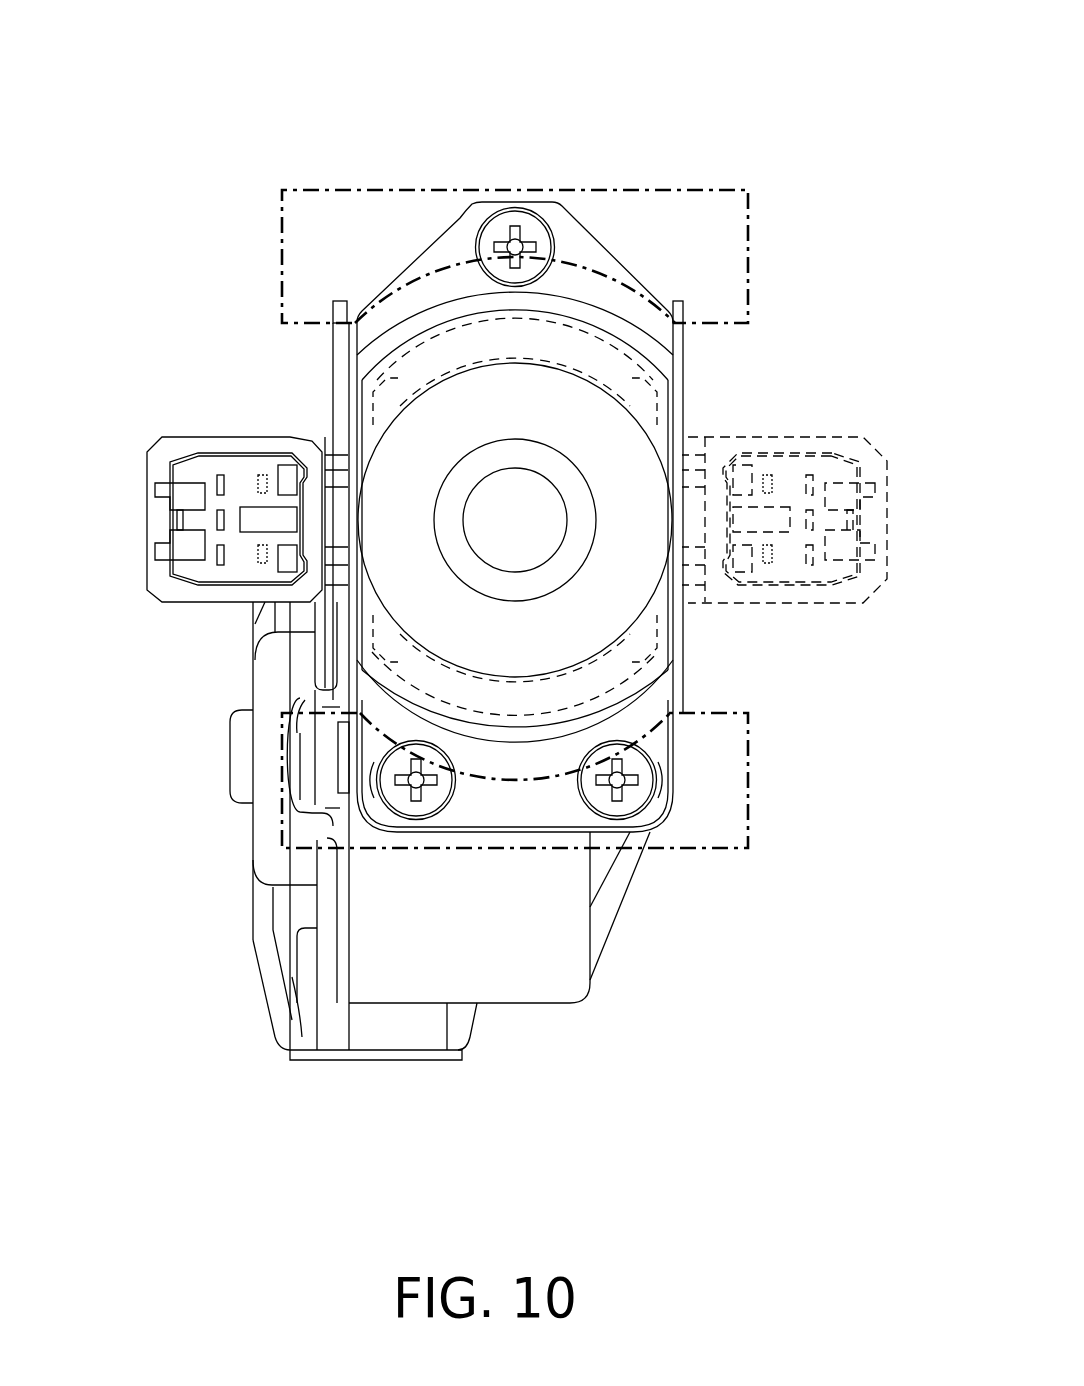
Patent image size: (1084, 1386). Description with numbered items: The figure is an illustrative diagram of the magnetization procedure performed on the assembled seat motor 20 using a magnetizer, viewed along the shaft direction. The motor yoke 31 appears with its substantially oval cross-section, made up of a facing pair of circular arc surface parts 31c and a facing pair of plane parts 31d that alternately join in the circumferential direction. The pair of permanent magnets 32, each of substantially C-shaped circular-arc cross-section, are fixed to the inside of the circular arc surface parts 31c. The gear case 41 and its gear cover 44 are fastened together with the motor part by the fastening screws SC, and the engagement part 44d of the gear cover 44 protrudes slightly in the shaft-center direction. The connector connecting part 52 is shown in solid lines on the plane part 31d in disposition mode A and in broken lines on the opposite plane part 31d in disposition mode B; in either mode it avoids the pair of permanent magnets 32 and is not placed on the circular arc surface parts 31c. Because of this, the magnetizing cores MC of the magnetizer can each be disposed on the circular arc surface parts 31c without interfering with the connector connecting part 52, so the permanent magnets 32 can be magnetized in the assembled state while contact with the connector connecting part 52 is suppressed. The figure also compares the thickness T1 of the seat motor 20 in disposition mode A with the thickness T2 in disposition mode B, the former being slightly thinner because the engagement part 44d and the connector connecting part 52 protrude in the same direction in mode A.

The seat motor 20 is at (785, 293).
The motor yoke 31 is at (396, 278).
The circular arc surface parts 31c is at (452, 302).
The plane parts 31d is at (333, 440).
The permanent magnets 32 is at (598, 335).
The gear case 41 is at (598, 1000).
The gear cover 44 is at (258, 753).
The engagement part 44d is at (242, 741).
The connector connecting part 52 is at (233, 445).
The fastening screws SC is at (500, 228).
The magnetizing cores MC is at (316, 237).
The thickness in disposition mode A T1 is at (146, 432).
The thickness in disposition mode B T2 is at (886, 436).